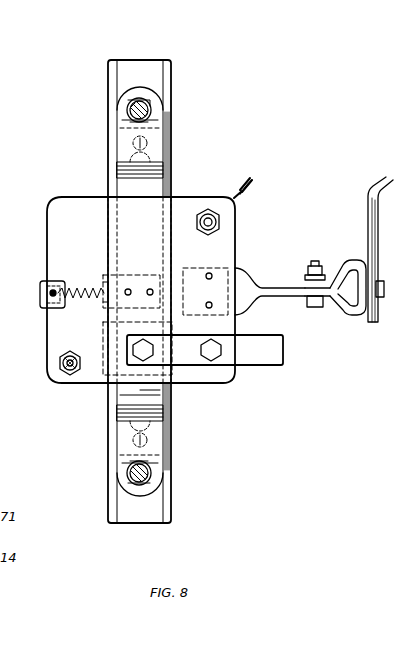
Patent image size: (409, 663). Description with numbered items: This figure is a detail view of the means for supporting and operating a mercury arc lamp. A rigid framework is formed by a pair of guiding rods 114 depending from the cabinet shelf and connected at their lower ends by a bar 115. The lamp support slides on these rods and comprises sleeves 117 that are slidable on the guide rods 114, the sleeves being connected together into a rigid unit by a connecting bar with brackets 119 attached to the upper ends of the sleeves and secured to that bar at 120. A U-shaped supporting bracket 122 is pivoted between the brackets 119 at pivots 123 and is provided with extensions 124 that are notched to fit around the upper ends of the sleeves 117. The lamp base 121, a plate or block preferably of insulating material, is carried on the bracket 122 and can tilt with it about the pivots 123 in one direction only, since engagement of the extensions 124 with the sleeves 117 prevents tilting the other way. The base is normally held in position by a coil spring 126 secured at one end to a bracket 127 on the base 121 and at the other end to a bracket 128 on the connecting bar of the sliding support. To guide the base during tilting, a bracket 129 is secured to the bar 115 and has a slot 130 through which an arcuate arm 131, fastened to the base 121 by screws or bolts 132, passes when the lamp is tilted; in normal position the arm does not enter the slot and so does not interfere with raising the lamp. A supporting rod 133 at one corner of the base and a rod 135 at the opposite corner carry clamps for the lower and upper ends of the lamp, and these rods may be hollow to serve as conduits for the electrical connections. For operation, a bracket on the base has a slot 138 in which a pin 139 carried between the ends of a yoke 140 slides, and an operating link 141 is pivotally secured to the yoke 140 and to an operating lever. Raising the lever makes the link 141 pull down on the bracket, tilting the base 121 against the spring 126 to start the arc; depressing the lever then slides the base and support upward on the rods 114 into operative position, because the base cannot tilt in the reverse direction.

The bar 115 is at (172, 90).
The guiding rods 114 is at (150, 112).
The sleeves 117 is at (127, 111).
The securing point 120 is at (166, 135).
The extensions 124 is at (126, 142).
The brackets 119 is at (117, 162).
The pivots 123 is at (135, 181).
The U-shaped supporting bracket 122 is at (120, 396).
The rod 135 is at (222, 219).
The bracket 127 is at (230, 266).
The coil spring 126 is at (92, 290).
The bracket 128 is at (120, 280).
The lamp base 121 is at (40, 293).
The arcuate arm 131 is at (246, 315).
The screws or bolts 132 is at (177, 350).
The bracket 129 is at (105, 338).
The slot 130 is at (97, 357).
The supporting rod 133 is at (66, 372).
The slot 138 is at (305, 287).
The pin 139 is at (314, 307).
The yoke 140 is at (350, 262).
The operating link 141 is at (368, 210).